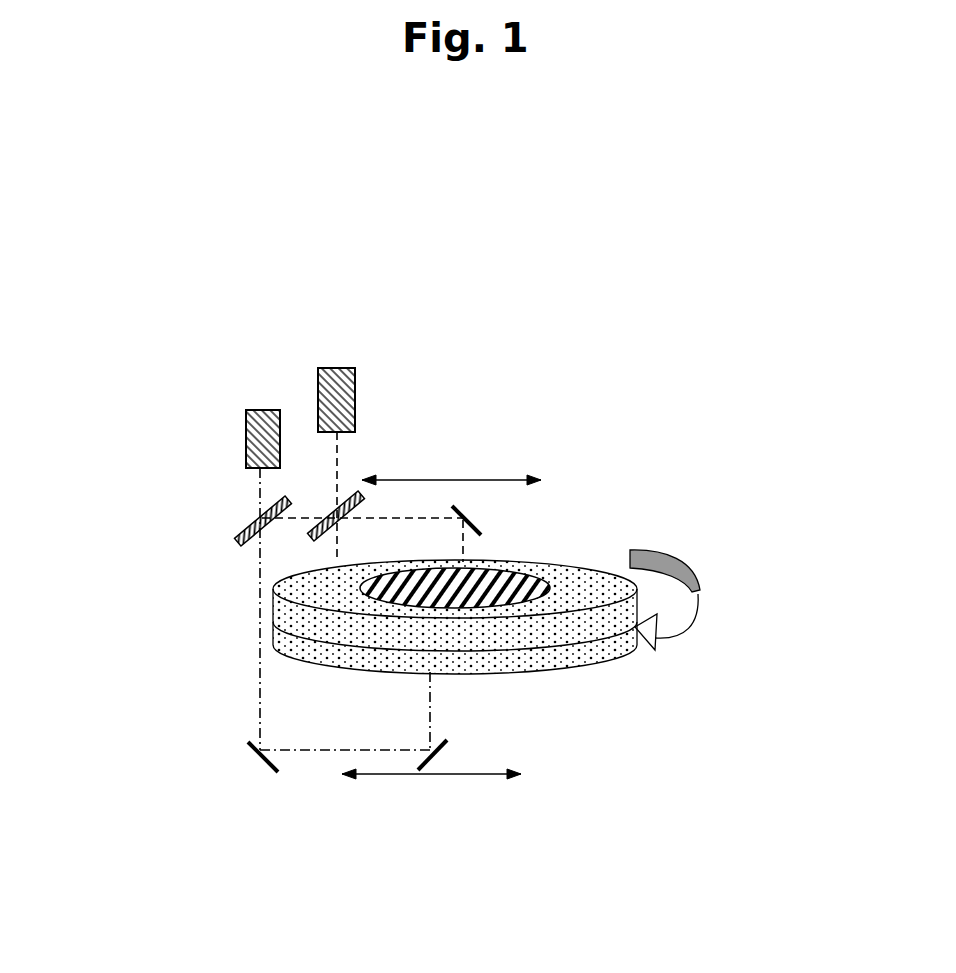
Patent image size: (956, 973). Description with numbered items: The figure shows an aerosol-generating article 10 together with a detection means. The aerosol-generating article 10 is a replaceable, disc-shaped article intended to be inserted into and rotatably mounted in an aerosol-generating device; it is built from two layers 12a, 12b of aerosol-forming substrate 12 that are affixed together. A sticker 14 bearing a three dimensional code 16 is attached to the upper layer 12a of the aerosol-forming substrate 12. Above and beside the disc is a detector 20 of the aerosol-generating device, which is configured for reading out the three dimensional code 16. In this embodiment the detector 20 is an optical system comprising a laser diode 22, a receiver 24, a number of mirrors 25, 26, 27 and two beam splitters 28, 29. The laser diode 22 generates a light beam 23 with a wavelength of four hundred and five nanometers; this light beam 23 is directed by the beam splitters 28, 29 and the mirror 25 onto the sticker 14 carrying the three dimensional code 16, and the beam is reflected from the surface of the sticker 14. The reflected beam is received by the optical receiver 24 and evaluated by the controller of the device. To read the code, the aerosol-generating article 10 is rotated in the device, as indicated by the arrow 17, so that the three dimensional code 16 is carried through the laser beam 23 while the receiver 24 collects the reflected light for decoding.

The aerosol-generating article 10 is at (617, 428).
The aerosol-forming substrate 12 is at (539, 639).
The upper layer of aerosol-forming substrate 12a is at (593, 623).
The lower layer of aerosol-forming substrate 12b is at (537, 660).
The sticker 14 is at (352, 588).
The three dimensional code 16 is at (505, 585).
The arrow 17 is at (693, 570).
The detector 20 is at (267, 373).
The laser diode 22 is at (246, 412).
The light beam 23 is at (260, 692).
The receiver 24 is at (340, 368).
The mirror 25 is at (480, 530).
The mirror 26 is at (253, 748).
The mirror 27 is at (437, 754).
The beam splitter 28 is at (257, 521).
The beam splitter 29 is at (317, 492).